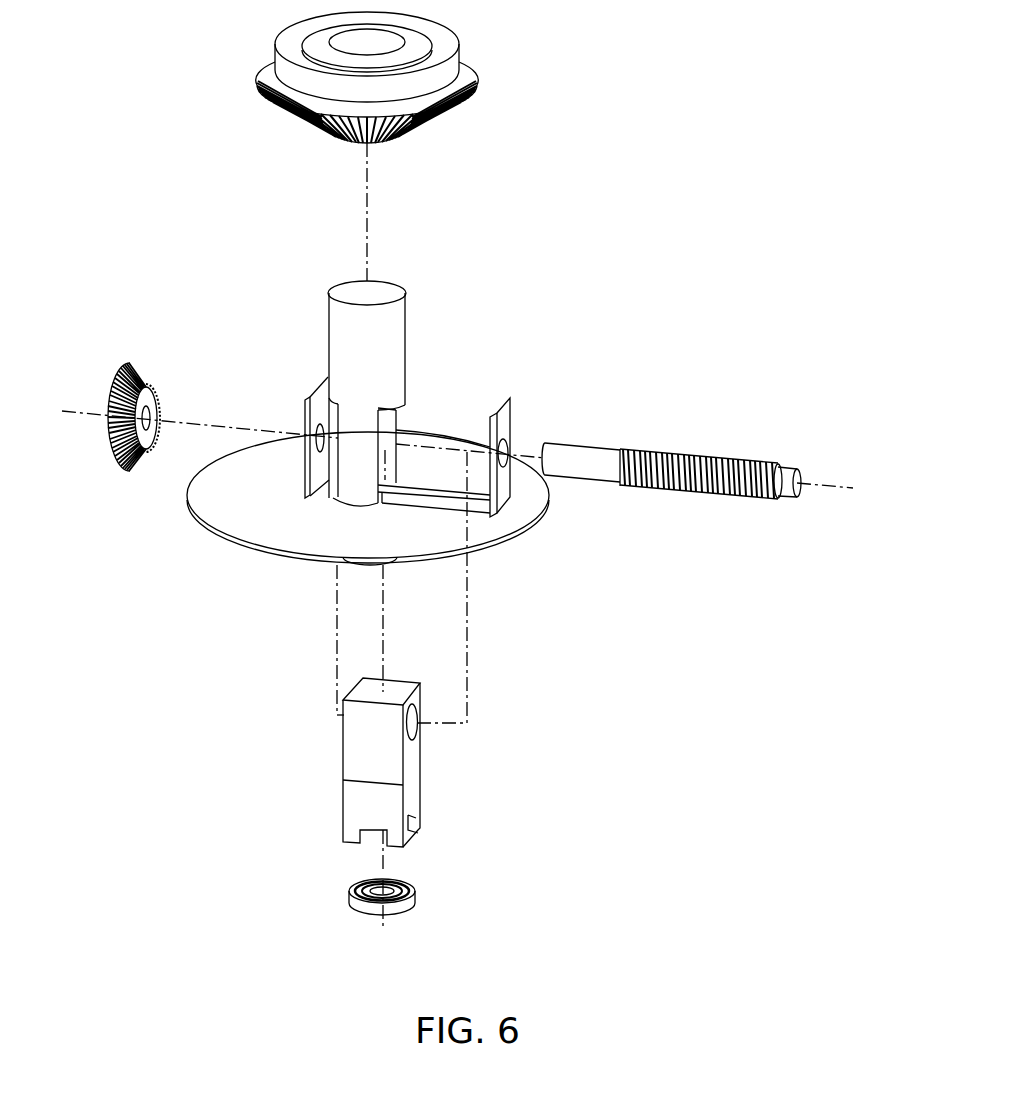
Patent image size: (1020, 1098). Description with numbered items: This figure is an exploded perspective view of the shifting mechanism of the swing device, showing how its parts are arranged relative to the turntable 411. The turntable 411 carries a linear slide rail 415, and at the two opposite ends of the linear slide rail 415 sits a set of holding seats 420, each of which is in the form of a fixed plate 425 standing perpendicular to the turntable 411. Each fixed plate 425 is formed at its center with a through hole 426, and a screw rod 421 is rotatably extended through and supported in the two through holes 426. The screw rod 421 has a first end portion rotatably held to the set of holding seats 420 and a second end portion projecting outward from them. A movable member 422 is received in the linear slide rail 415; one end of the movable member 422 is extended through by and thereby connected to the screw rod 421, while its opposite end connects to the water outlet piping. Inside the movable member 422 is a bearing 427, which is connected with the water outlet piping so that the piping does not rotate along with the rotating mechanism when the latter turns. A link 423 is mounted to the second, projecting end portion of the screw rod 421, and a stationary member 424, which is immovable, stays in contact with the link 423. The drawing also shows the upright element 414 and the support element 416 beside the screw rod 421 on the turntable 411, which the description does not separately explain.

The turntable 411 is at (223, 495).
The rotating shaft 414 is at (368, 348).
The linear slide rail 415 is at (478, 517).
The support 416 is at (388, 422).
The holding seats 420 is at (307, 478).
The screw rod 421 is at (725, 500).
The movable member 422 is at (410, 790).
The link 423 is at (133, 472).
The stationary member 424 is at (430, 78).
The fixed plate 425 is at (508, 418).
The through hole 426 is at (512, 453).
The bearing 427 is at (405, 907).